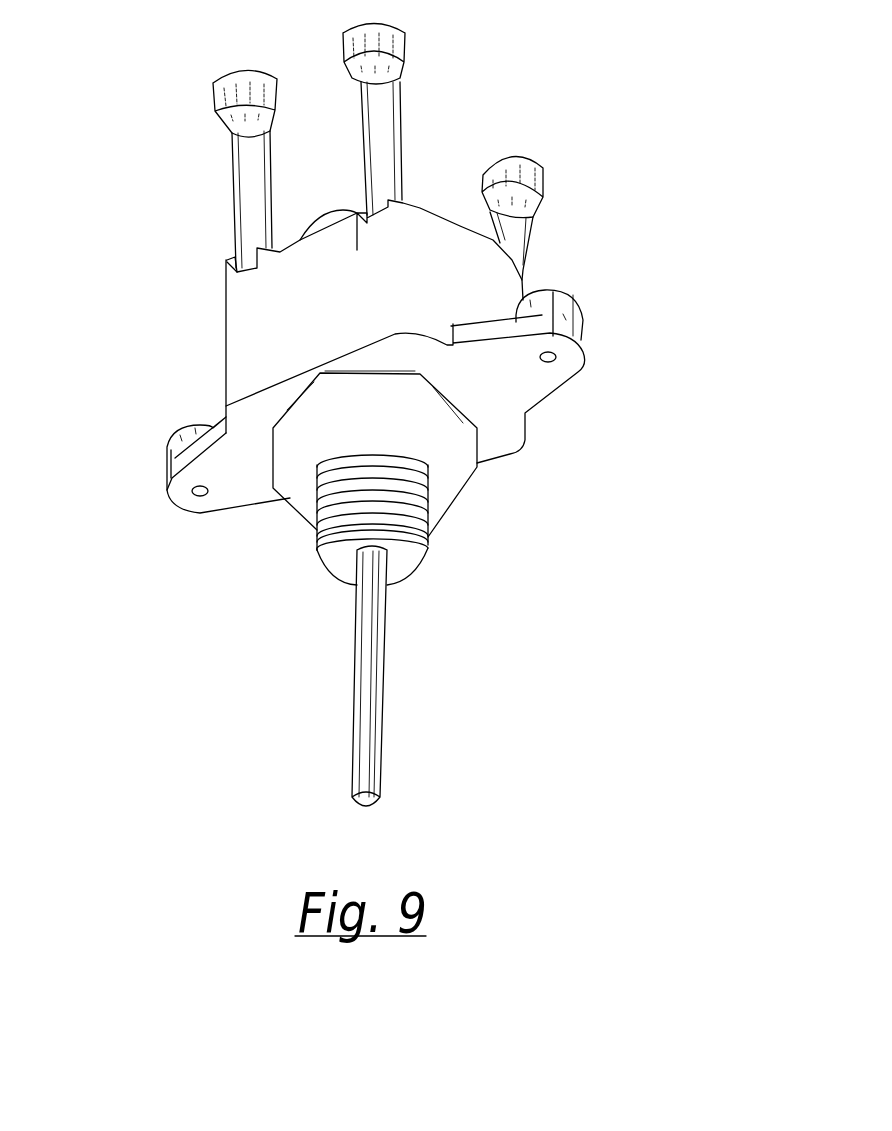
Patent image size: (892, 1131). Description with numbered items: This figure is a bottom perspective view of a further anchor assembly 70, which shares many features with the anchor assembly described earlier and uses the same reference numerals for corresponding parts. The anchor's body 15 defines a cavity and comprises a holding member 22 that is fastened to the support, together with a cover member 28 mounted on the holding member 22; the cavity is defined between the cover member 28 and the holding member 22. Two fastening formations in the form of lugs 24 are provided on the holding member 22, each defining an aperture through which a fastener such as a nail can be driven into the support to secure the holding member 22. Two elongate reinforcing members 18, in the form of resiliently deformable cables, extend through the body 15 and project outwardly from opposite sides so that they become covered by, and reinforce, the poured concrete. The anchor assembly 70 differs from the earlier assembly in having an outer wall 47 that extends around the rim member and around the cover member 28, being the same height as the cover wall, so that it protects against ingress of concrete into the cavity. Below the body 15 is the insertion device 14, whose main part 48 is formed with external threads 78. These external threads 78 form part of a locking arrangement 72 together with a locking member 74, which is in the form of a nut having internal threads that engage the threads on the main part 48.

The anchor assembly 70 is at (169, 263).
The reinforcing members 18 is at (377, 127).
The outer wall 47 is at (427, 255).
The cover member 28 is at (321, 200).
The body 15 is at (208, 347).
The holding member 22 is at (556, 402).
The lugs 24 is at (186, 430).
The insertion device 14 is at (303, 594).
The locking member 74 is at (453, 470).
The external threads 78 is at (317, 513).
The locking arrangement 72 is at (467, 530).
The main part 48 is at (403, 563).